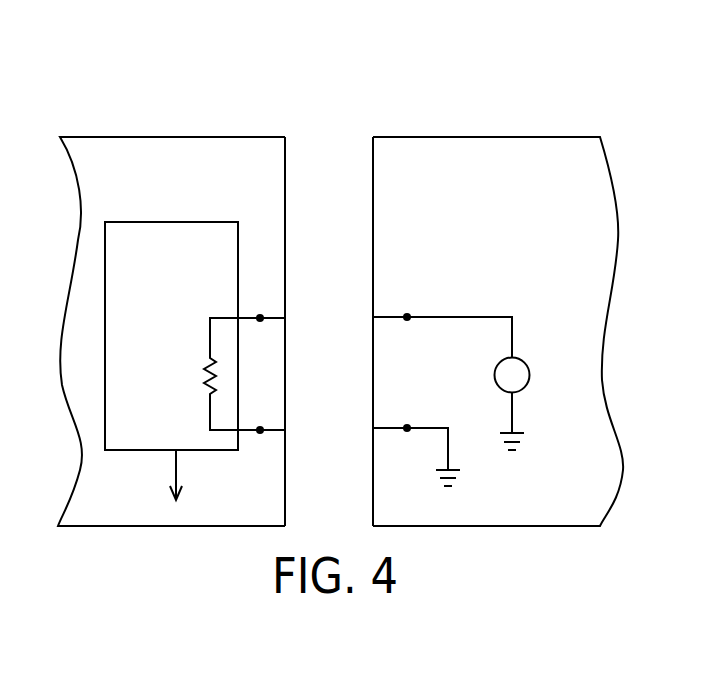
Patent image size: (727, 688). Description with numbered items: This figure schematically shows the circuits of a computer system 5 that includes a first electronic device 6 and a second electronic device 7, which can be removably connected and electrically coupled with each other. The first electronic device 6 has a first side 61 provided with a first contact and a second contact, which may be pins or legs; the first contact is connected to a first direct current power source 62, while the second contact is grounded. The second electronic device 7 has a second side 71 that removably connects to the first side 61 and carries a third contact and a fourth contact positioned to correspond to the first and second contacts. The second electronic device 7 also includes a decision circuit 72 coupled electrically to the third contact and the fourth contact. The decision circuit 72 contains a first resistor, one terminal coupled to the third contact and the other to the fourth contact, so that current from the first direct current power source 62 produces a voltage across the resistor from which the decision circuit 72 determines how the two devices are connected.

The computer system 5 is at (453, 70).
The first electronic device 6 is at (448, 137).
The second electronic device 7 is at (211, 137).
The first side 61 is at (370, 150).
The first direct current power source 62 is at (530, 372).
The second side 71 is at (295, 150).
The decision circuit 72 is at (165, 221).